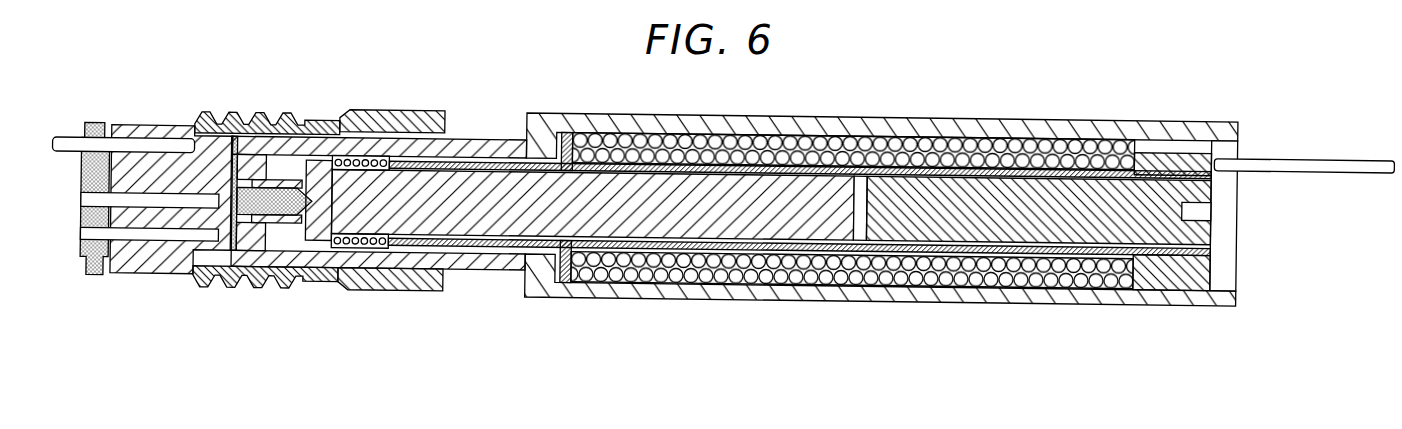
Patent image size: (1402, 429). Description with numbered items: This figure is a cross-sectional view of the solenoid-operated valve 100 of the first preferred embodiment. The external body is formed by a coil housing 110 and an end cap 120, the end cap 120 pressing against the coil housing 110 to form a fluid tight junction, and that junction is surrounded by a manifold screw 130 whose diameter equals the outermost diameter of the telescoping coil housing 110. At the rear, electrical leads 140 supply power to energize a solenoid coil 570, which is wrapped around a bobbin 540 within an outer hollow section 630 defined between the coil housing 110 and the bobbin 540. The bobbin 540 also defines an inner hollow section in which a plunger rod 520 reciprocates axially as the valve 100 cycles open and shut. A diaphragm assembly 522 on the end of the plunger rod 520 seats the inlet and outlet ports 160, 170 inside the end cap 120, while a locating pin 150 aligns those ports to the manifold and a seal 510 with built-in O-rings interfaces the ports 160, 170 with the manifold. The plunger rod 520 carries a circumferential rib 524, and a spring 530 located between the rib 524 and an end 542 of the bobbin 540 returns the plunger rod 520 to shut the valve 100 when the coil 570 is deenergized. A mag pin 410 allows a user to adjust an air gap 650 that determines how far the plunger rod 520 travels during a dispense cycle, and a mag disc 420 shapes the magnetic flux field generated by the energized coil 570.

The solenoid-operated valve 100 is at (565, 56).
The coil housing 110 is at (703, 298).
The end cap 120 is at (163, 128).
The manifold screw 130 is at (417, 292).
The electrical leads 140 is at (1283, 150).
The locating pin 150 is at (80, 124).
The valve inlet port 160 is at (83, 207).
The valve outlet port 170 is at (80, 243).
The mag pin 410 is at (1064, 215).
The mag disc 420 is at (1190, 286).
The seal 510 is at (95, 283).
The plunger rod 520 is at (557, 214).
The diaphragm assembly 522 is at (238, 114).
The rib 524 is at (315, 248).
The spring 530 is at (363, 160).
The bobbin 540 is at (572, 127).
The end of bobbin 542 is at (390, 162).
The solenoid coil 570 is at (1007, 276).
The outer hollow section 630 is at (880, 296).
The air gap 650 is at (860, 172).